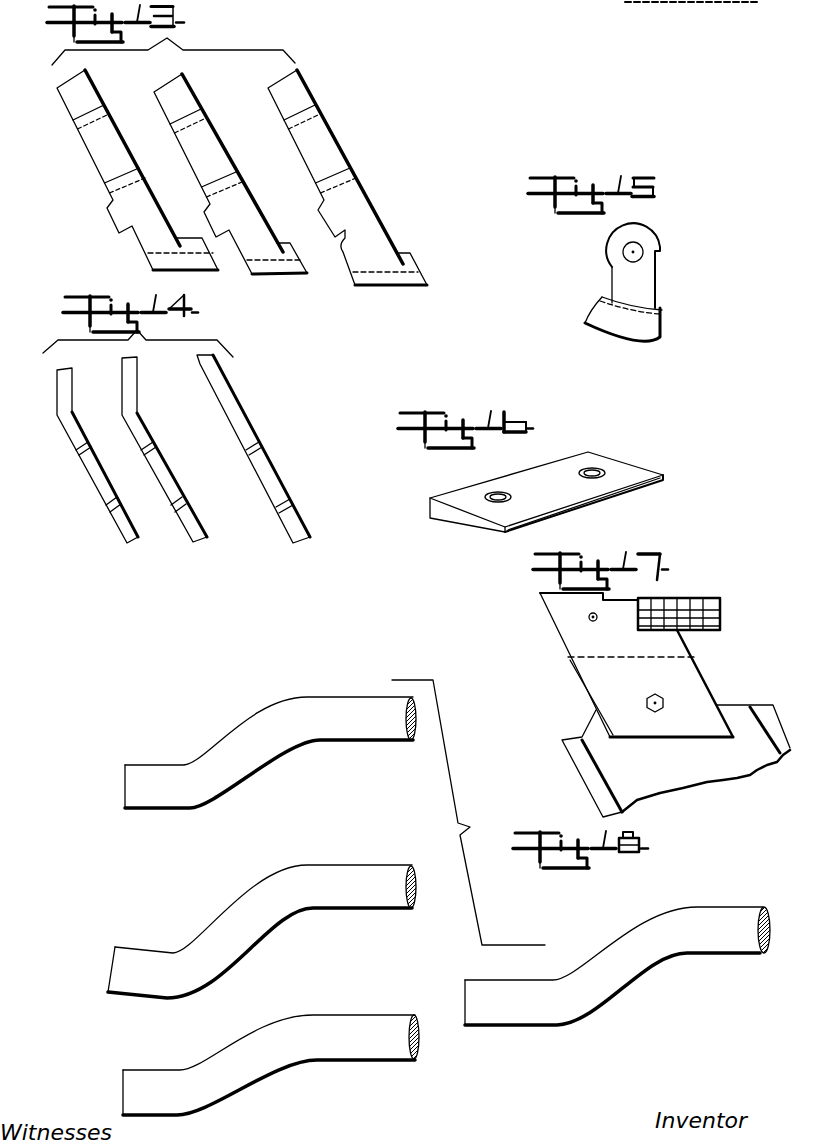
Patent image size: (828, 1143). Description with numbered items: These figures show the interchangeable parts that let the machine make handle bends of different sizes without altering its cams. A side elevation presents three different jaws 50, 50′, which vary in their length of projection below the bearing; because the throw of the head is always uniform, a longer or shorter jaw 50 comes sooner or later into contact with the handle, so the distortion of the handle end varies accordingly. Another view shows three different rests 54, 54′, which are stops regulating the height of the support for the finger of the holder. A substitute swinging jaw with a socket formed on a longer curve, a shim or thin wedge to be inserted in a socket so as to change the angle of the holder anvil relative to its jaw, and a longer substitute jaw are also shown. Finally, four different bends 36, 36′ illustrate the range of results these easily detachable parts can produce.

In FIG. 13, the jaw 50 is at (238, 193).
In FIG. 13, the jaw 50′ is at (140, 192).
In FIG. 14, the rest 54 is at (88, 465).
In FIG. 14, the rest 54′ is at (158, 470).
In FIG. 18, the bend 36 is at (325, 707).
In FIG. 18, the bend 36′ is at (327, 873).